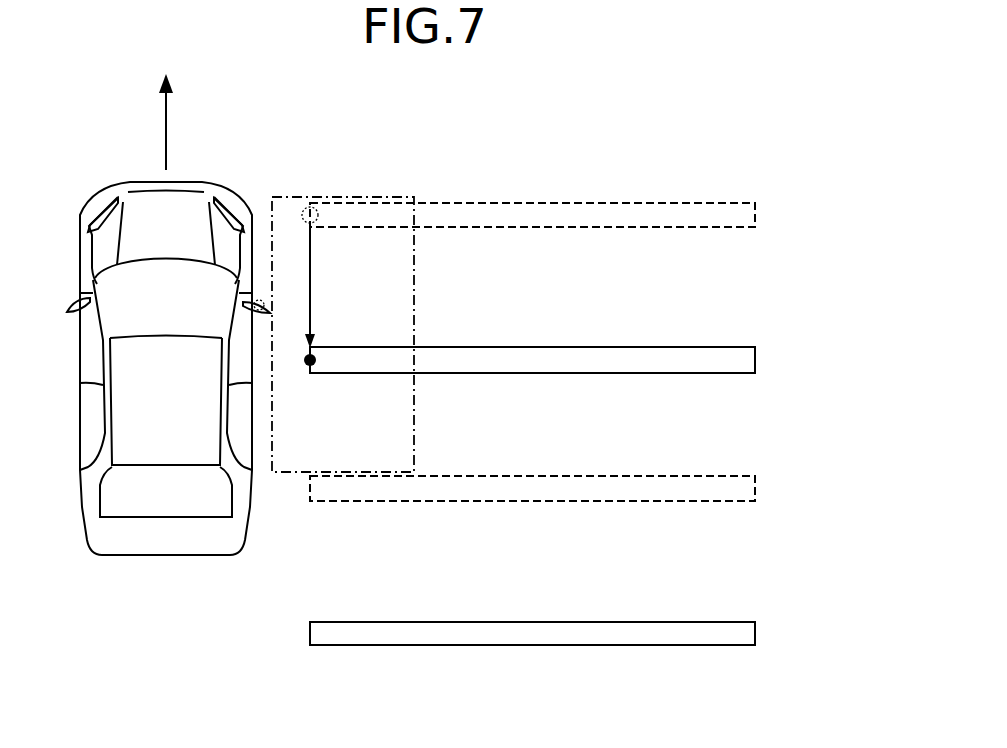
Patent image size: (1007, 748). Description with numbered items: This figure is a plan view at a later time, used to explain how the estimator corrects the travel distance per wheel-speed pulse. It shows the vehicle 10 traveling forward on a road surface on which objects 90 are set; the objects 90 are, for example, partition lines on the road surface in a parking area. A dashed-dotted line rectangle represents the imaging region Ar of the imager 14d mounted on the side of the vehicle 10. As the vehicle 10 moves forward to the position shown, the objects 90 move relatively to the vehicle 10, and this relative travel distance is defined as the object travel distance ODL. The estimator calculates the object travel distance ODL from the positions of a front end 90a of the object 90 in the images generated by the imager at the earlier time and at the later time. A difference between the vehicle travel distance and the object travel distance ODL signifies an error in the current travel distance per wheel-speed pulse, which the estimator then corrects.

The vehicle 10 is at (79, 257).
The imager 14d is at (262, 298).
The object 90 is at (643, 203).
The front end of the object 90a is at (303, 218).
The imaging region Ar is at (416, 413).
The object travel distance ODL is at (334, 287).